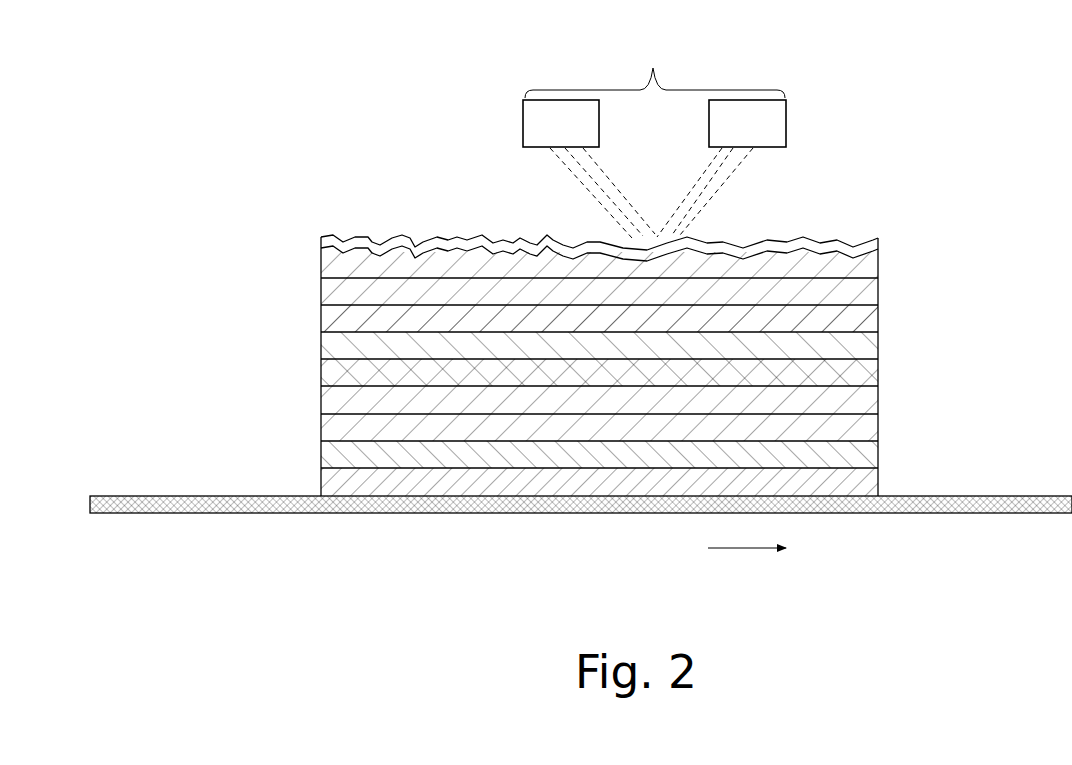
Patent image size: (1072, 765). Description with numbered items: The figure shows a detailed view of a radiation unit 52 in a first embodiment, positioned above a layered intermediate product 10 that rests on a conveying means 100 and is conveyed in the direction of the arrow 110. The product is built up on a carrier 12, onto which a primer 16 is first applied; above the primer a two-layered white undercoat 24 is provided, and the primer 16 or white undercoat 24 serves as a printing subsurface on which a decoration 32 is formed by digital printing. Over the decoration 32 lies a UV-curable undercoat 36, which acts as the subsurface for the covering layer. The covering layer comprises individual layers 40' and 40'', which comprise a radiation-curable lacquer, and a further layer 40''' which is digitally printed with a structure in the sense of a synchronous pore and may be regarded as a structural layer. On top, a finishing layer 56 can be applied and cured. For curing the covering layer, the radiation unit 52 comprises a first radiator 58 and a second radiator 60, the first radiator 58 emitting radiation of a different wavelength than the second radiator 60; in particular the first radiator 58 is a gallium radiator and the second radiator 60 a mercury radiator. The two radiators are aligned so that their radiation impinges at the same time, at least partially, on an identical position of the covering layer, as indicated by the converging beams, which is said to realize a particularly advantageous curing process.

The coated article / multilayer structure 10 is at (921, 176).
The carrier 12 is at (320, 478).
The primer 16 is at (864, 453).
The white undercoat 24 is at (320, 397).
The decoration 32 is at (864, 375).
The undercoat 36 is at (320, 342).
The individual layer of the covering layer 40' is at (658, 330).
The individual layer of the covering layer 40'' is at (661, 300).
The structural layer 40''' is at (665, 268).
The radiation unit 52 is at (654, 138).
The finishing layer 56 is at (320, 240).
The first radiator 58 is at (578, 137).
The second radiator 60 is at (765, 137).
The conveying means 100 is at (928, 514).
The arrow 110 is at (752, 550).